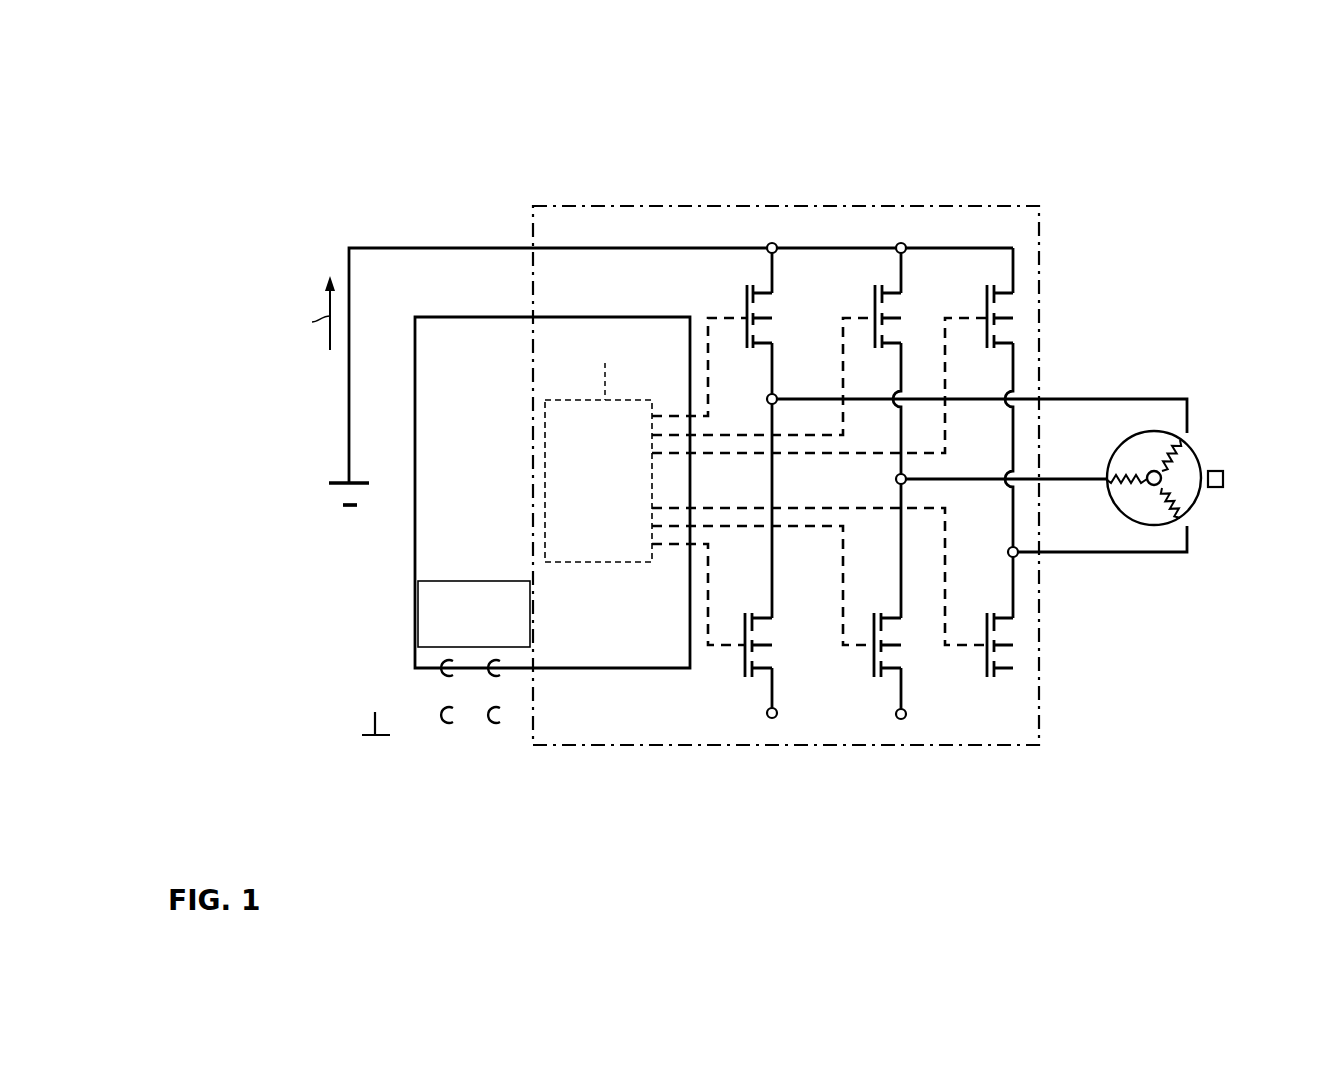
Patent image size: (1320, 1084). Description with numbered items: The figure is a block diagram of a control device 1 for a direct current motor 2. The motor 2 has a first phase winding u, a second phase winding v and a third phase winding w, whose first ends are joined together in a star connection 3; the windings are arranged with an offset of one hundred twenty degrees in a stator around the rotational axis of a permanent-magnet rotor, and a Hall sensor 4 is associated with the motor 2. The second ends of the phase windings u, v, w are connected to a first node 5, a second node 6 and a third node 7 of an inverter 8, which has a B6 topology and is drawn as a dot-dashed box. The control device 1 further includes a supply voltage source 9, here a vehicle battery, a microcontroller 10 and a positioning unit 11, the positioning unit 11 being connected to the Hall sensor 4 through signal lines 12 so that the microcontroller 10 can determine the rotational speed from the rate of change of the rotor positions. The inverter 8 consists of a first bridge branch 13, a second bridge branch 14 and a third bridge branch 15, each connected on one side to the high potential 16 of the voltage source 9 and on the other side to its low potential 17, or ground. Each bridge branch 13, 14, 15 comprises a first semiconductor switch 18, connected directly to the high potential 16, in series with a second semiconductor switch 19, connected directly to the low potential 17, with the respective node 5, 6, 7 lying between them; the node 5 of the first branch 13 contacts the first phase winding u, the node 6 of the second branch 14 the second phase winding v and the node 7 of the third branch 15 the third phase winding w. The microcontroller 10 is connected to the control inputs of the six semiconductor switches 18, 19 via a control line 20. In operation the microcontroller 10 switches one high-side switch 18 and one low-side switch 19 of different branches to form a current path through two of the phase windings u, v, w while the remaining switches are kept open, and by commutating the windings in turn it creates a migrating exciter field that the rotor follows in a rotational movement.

The control device 1 is at (436, 176).
The direct current motor 2 is at (1207, 458).
The star connection 3 is at (1150, 493).
The Hall sensor 4 is at (1224, 479).
The first node 5 is at (773, 398).
The second node 6 is at (903, 478).
The third node 7 is at (1015, 555).
The inverter 8 is at (1005, 205).
The supply voltage source 9 is at (333, 497).
The microcontroller 10 is at (605, 363).
The positioning unit 11 is at (483, 648).
The signal lines 12 is at (637, 785).
The first bridge branch 13 is at (773, 557).
The second bridge branch 14 is at (900, 568).
The third bridge branch 15 is at (1015, 593).
The high potential 16 is at (341, 483).
The low potential 17 is at (346, 510).
The first semiconductor switch 18 is at (773, 308).
The second semiconductor switch 19 is at (778, 637).
The control line 20 is at (712, 453).
The first phase winding u is at (1178, 455).
The second phase winding v is at (1130, 475).
The third phase winding w is at (1170, 498).